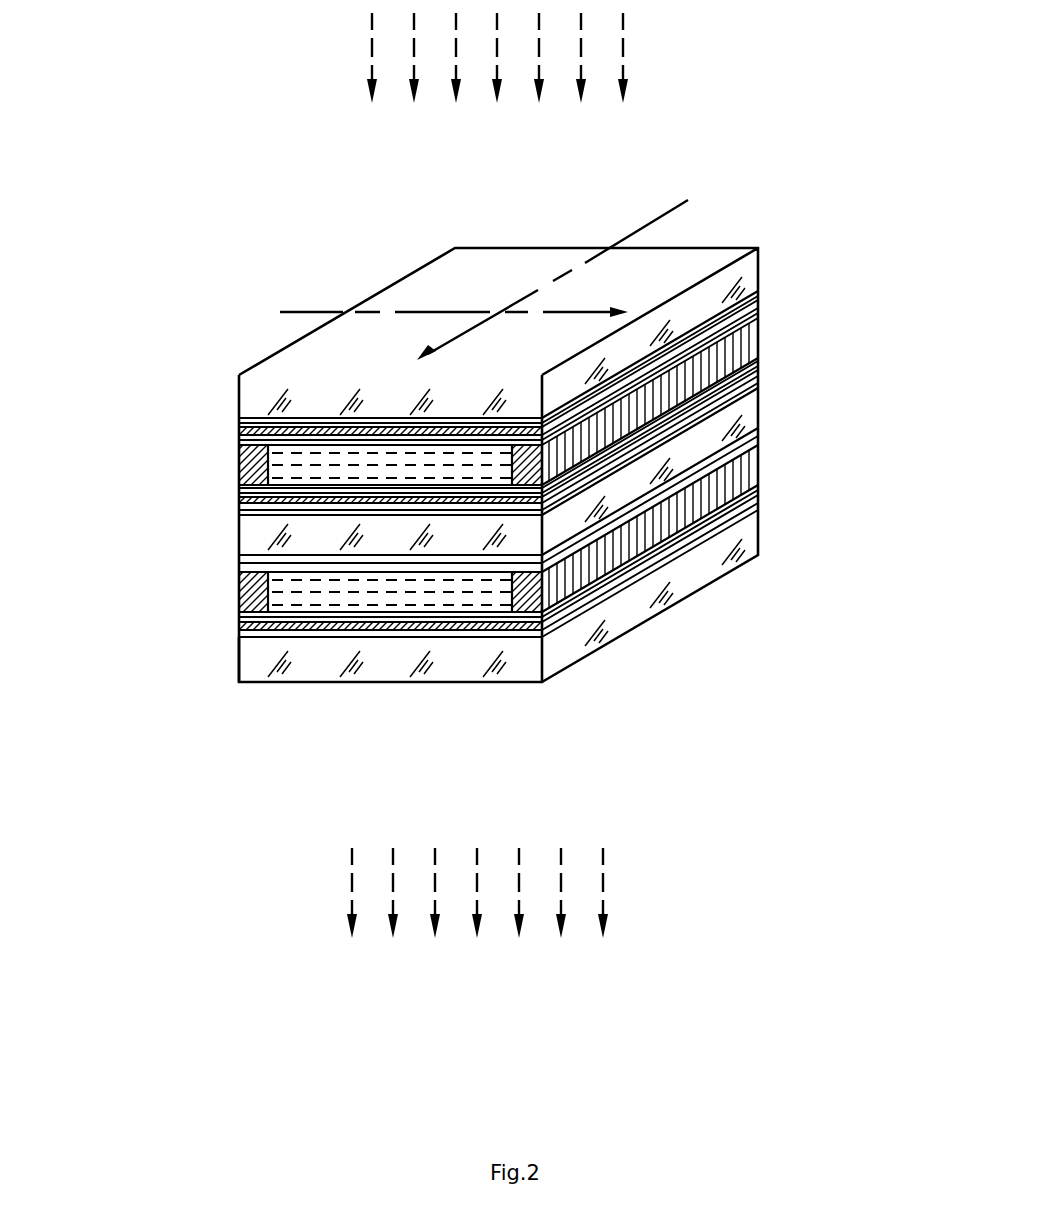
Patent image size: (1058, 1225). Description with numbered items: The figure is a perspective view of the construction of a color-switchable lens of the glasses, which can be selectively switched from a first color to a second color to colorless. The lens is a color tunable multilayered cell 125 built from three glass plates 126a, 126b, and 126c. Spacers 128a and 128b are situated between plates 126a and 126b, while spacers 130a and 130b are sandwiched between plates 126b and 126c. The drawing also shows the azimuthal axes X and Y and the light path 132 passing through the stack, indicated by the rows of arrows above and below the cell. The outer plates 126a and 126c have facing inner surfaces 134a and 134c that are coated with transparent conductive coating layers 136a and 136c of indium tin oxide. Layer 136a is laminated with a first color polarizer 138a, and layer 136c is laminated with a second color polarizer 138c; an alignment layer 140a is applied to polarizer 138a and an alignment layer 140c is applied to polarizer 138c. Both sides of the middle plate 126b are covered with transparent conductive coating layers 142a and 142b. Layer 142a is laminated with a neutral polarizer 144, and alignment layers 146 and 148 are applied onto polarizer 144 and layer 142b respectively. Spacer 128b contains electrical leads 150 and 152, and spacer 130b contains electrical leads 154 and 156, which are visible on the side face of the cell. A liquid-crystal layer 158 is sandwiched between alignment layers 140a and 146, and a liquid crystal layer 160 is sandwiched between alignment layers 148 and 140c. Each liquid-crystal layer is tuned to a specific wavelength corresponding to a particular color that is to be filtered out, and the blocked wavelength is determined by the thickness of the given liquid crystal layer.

The color tunable multilayered cell 125 is at (355, 300).
The glass plate 126a is at (328, 392).
The glass plate 126b is at (312, 556).
The glass plate 126c is at (338, 655).
The spacer 128a is at (252, 483).
The spacer 128b is at (695, 385).
The spacer 130a is at (300, 605).
The spacer 130b is at (722, 560).
The light path 132 is at (477, 860).
The inner surface 134a is at (292, 417).
The inner surface 134c is at (577, 630).
The transparent conductive coating layer 136a is at (745, 302).
The transparent conductive coating layer 136c is at (572, 617).
The first color polarizer 138a is at (260, 428).
The second color polarizer 138c is at (607, 598).
The alignment layer 140a is at (758, 315).
The alignment layer 140c is at (493, 617).
The transparent conductive coating layer 142a is at (283, 509).
The transparent conductive coating layer 142b is at (265, 590).
The neutral polarizer 144 is at (695, 412).
The alignment layer 146 is at (275, 491).
The alignment layer 148 is at (703, 488).
The electrical lead 150 is at (690, 355).
The electrical lead 152 is at (650, 445).
The electrical lead 154 is at (640, 565).
The electrical lead 156 is at (653, 525).
The liquid-crystal layer 158 is at (293, 473).
The liquid crystal layer 160 is at (238, 675).